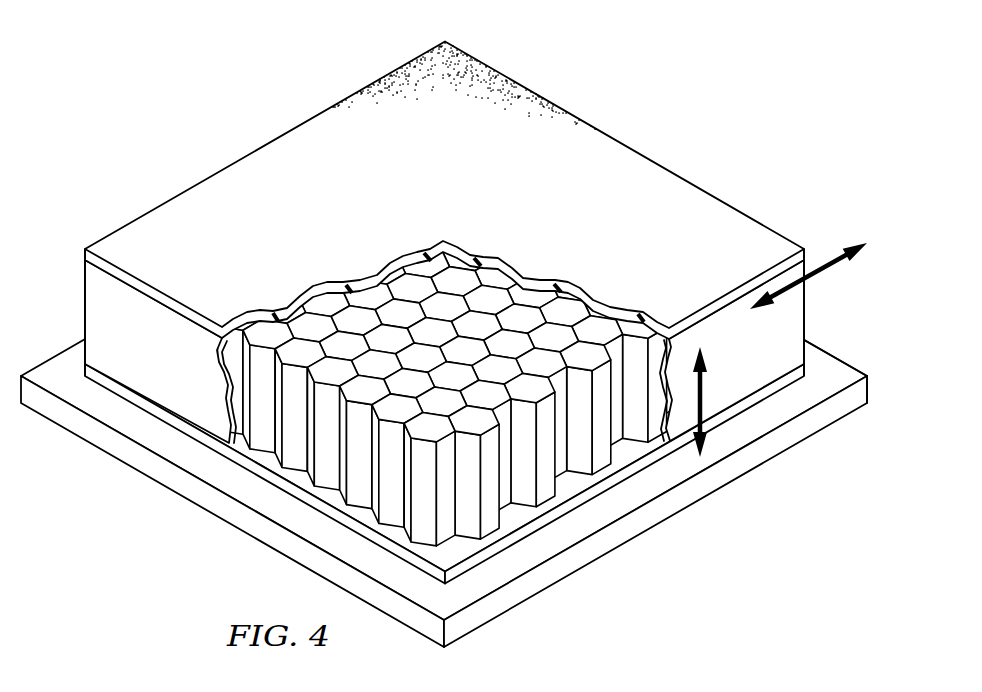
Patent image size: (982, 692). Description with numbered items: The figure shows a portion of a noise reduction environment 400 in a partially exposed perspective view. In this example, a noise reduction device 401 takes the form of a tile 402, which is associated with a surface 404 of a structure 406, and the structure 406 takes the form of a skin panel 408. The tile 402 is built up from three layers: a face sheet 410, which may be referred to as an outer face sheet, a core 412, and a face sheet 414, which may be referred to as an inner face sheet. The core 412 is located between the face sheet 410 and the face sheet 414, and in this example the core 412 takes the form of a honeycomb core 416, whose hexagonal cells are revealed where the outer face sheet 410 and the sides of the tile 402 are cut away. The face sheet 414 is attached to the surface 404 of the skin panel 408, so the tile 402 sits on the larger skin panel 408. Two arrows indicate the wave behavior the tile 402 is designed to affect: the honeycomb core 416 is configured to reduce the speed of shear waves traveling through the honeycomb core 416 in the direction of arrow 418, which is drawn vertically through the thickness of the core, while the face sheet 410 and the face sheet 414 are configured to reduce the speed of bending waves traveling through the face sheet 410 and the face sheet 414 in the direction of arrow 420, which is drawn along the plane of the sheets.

The noise reduction environment 400 is at (284, 80).
The noise reduction device 401 is at (559, 109).
The tile 402 is at (616, 146).
The surface 404 is at (597, 514).
The structure 406 is at (830, 347).
The skin panel 408 is at (857, 363).
The face sheet 410 is at (83, 251).
The core 412 is at (98, 307).
The face sheet 414 is at (177, 424).
The honeycomb core 416 is at (295, 453).
The arrow 418 is at (708, 413).
The arrow 420 is at (827, 262).